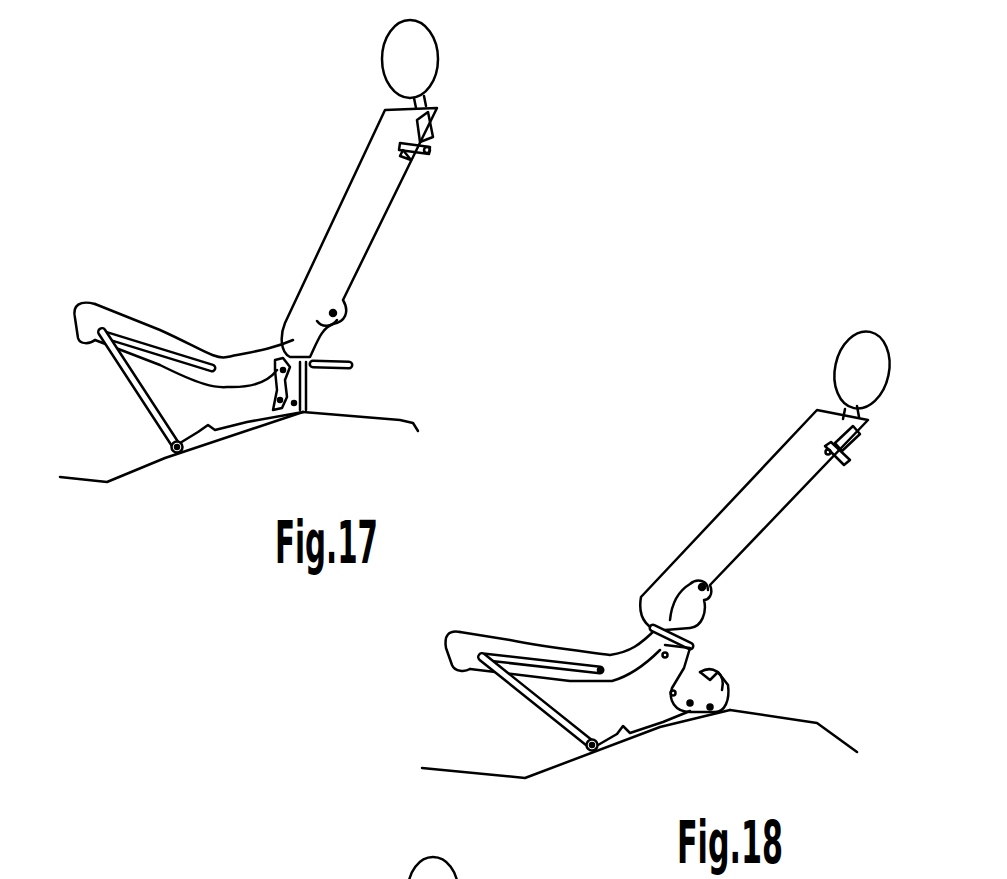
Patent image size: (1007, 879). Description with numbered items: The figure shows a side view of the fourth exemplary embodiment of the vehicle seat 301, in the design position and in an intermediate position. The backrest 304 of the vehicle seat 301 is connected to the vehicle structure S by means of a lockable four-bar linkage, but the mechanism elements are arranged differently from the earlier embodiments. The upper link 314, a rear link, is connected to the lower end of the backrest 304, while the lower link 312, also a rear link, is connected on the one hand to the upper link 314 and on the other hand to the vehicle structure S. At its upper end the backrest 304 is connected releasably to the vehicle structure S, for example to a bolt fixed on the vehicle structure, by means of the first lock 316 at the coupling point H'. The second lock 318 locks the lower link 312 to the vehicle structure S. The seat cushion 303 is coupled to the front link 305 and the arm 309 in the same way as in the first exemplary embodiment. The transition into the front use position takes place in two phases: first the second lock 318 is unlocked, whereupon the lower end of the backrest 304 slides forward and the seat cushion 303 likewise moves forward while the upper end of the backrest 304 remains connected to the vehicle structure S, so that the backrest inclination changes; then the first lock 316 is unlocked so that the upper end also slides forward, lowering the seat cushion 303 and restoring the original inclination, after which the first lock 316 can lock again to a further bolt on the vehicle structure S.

In FIG. 17, the vehicle seat 301 is at (276, 150).
In FIG. 18, the vehicle seat 301 is at (723, 445).
In FIG. 17, the seat cushion 303 is at (92, 313).
In FIG. 18, the seat cushion 303 is at (492, 640).
In FIG. 17, the backrest 304 is at (355, 220).
In FIG. 18, the backrest 304 is at (755, 515).
In FIG. 17, the front link 305 is at (132, 400).
In FIG. 18, the front link 305 is at (520, 708).
In FIG. 17, the arm 309 is at (335, 325).
In FIG. 18, the arm 309 is at (702, 607).
In FIG. 17, the lower link 312 is at (277, 395).
In FIG. 18, the lower link 312 is at (682, 663).
In FIG. 17, the upper link 314 is at (333, 358).
In FIG. 18, the upper link 314 is at (690, 638).
In FIG. 17, the first lock 316 is at (430, 150).
In FIG. 18, the first lock 316 is at (848, 460).
In FIG. 17, the second lock 318 is at (313, 387).
In FIG. 18, the second lock 318 is at (697, 693).
In FIG. 17, the coupling point H' is at (452, 185).
In FIG. 18, the coupling point H' is at (869, 488).
In FIG. 17, the vehicle structure S is at (350, 460).
In FIG. 18, the vehicle structure S is at (760, 760).